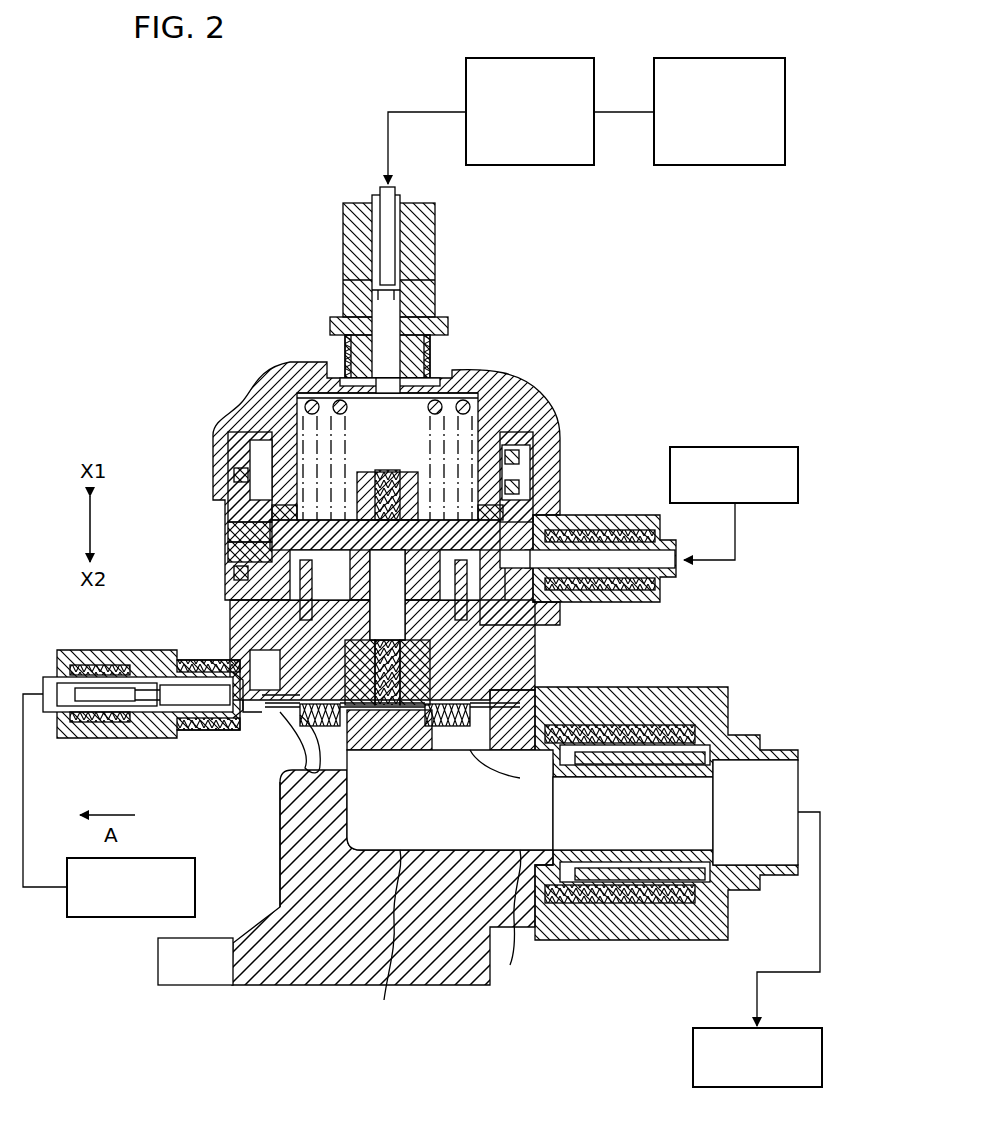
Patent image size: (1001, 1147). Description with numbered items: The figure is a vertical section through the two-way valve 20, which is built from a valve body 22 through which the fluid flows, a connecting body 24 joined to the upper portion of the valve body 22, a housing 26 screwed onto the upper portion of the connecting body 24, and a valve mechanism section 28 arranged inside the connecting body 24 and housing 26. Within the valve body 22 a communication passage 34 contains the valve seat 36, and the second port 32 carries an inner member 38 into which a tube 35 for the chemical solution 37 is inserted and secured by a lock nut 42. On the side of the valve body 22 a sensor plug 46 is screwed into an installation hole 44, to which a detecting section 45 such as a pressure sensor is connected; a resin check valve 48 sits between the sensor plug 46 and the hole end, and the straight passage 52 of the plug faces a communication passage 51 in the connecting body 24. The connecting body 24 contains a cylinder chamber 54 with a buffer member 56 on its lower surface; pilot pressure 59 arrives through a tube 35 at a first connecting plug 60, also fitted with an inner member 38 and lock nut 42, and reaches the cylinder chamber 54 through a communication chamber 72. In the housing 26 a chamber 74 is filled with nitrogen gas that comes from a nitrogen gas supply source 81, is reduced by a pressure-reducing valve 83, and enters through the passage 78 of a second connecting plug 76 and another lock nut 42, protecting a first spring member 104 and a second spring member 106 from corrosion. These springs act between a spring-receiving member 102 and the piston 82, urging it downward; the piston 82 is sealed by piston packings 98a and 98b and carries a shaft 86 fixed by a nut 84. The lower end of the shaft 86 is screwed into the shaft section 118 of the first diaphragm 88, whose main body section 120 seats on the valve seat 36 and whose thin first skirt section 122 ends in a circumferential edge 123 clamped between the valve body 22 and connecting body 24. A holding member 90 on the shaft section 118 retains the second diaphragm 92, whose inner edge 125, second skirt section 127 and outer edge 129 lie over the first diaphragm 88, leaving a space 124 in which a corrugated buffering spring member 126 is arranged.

The two-way valve 20 is at (585, 254).
The valve body 22 is at (458, 985).
The connecting body 24 is at (530, 655).
The housing 26 is at (548, 428).
The valve mechanism section 28 is at (522, 475).
The second port 32 is at (517, 915).
The communication passage 34 is at (385, 938).
The valve seat 36 is at (350, 752).
The chemical solution 37 is at (796, 1028).
The inner member 38 is at (612, 777).
The lock nut 42 is at (435, 248).
The installation hole 44 is at (172, 738).
The detecting section 45 is at (84, 917).
The sensor plug 46 is at (125, 738).
The check valve 48 is at (235, 730).
The communication passage 51 is at (250, 715).
The passage 52 is at (165, 685).
The cylinder chamber 54 is at (515, 600).
The buffer member 56 is at (228, 532).
The pilot pressure 59 is at (772, 447).
The first connecting plug 60 is at (570, 528).
The communication chamber 72 is at (228, 552).
The chamber 74 is at (480, 400).
The second connecting plug 76 is at (435, 298).
The passage 78 is at (345, 298).
The nitrogen gas supply source 81 is at (770, 58).
The piston 82 is at (300, 515).
The pressure-reducing valve 83 is at (580, 58).
The nut 84 is at (365, 480).
The shaft 86 is at (390, 470).
The first diaphragm 88 is at (382, 752).
The holding member 90 is at (425, 705).
The second diaphragm 92 is at (520, 690).
The piston packing 98a is at (234, 478).
The piston packing 98b is at (234, 573).
The spring-receiving member 102 is at (262, 430).
The first spring member 104 is at (440, 382).
The second spring member 106 is at (440, 392).
The shaft section 118 is at (252, 660).
The main body section 120 is at (395, 750).
The first skirt section 122 is at (415, 748).
The circumferential edge 123 is at (480, 750).
The space 124 is at (282, 712).
The inner edge 125 is at (280, 835).
The buffering spring member 126 is at (455, 740).
The second skirt section 127 is at (205, 683).
The outer edge 129 is at (295, 735).
The tube 35 is at (448, 112).